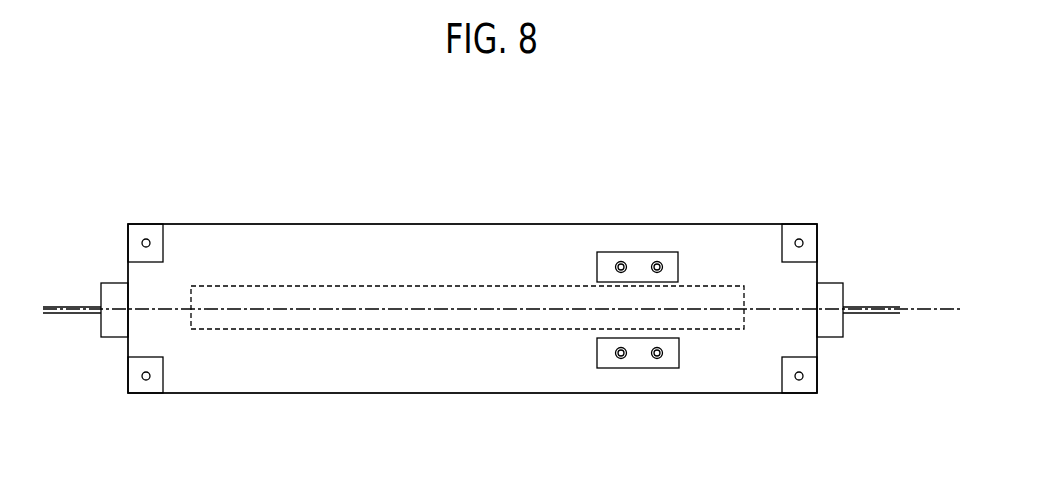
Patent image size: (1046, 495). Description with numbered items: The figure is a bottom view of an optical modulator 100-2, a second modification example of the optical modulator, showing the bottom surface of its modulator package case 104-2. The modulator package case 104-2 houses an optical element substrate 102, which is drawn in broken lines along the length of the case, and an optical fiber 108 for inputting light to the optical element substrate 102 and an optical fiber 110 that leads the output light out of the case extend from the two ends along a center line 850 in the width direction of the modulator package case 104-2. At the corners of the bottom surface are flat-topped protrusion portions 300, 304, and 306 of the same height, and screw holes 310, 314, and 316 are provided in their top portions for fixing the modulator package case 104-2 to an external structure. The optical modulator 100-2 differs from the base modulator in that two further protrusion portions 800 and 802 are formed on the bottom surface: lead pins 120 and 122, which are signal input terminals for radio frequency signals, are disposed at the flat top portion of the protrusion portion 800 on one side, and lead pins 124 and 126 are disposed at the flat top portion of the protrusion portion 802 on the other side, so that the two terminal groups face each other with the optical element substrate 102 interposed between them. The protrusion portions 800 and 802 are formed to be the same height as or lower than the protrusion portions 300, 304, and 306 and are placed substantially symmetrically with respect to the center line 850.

The optical modulator 100-2 is at (242, 127).
The optical element substrate 102 is at (330, 300).
The modulator package case 104-2 is at (445, 242).
The optical fiber 108 is at (863, 313).
The optical fiber 110 is at (69, 318).
The lead pin 120 is at (619, 358).
The lead pin 122 is at (660, 358).
The lead pin 124 is at (619, 264).
The lead pin 126 is at (660, 262).
The protrusion portion 300 is at (151, 239).
The protrusion portion 304 is at (785, 232).
The protrusion portion 306 is at (786, 387).
The screw hole 310 is at (128, 224).
The screw hole 314 is at (805, 241).
The screw hole 316 is at (800, 380).
The protrusion portion 800 is at (638, 372).
The protrusion portion 802 is at (636, 255).
The center line 850 is at (920, 308).